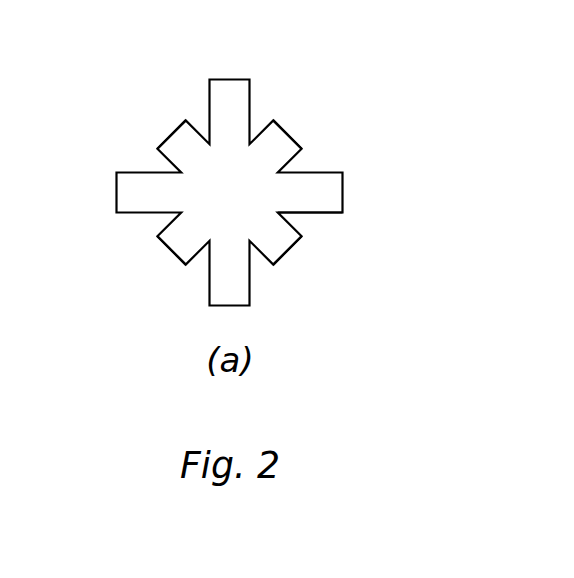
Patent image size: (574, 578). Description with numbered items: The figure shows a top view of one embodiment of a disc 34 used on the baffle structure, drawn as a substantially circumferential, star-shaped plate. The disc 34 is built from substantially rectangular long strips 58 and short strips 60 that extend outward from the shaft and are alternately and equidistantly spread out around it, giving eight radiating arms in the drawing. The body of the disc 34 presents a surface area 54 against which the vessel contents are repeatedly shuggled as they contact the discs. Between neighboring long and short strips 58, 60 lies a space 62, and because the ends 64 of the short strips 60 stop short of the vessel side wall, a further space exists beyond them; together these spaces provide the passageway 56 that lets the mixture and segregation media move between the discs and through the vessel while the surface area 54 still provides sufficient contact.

The disc 34 is at (300, 96).
The surface area 54 is at (214, 204).
The passageway 56 is at (152, 223).
The long strip 58 is at (322, 200).
The short strip 60 is at (278, 252).
The space 62 is at (298, 161).
The end of short strip 64 is at (173, 131).